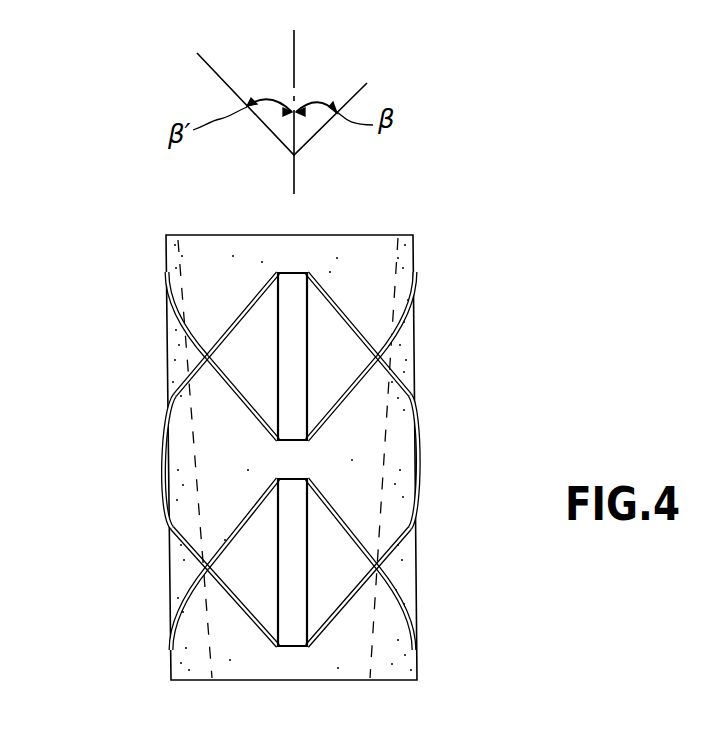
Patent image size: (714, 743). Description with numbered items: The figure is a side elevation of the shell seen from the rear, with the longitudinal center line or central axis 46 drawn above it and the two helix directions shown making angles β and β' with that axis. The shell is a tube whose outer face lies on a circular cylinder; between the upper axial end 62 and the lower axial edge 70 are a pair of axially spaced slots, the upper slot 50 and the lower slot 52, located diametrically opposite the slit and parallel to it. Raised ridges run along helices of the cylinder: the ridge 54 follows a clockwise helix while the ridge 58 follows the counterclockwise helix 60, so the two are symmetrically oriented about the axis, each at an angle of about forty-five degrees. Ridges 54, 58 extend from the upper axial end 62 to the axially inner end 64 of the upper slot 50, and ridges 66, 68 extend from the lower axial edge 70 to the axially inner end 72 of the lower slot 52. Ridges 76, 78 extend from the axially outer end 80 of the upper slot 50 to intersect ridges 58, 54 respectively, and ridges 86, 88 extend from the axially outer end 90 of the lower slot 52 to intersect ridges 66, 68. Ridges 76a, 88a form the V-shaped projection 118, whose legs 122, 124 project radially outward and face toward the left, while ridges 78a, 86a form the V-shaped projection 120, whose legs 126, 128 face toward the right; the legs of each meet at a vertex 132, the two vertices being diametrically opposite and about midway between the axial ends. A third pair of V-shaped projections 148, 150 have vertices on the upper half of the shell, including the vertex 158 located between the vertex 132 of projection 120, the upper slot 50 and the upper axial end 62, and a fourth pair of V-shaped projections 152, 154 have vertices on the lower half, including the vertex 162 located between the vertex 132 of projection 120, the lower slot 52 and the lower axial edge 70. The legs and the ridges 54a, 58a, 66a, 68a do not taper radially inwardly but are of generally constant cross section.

The central axis 46 is at (295, 51).
The upper slot 50 is at (277, 270).
The lower slot 52 is at (307, 645).
The ridge 54 is at (338, 404).
The ridge 54a is at (415, 273).
The ridge 58 is at (256, 405).
The ridge 58a is at (166, 286).
The helix 60 is at (165, 276).
The upper axial end 62 is at (352, 234).
The axially inner end of slot 50 64 is at (294, 441).
The ridge 66 is at (338, 520).
The ridge 66a is at (420, 638).
The ridge 68 is at (243, 524).
The ridge 68a is at (168, 638).
The lower axial edge 70 is at (312, 684).
The axially inner end of slot 52 72 is at (290, 479).
The ridge 76 is at (245, 311).
The ridge 76a is at (163, 452).
The ridge 78 is at (340, 313).
The ridge 78a is at (418, 442).
The axially outer end of slot 50 80 is at (283, 272).
The ridge 86 is at (348, 606).
The ridge 86a is at (416, 497).
The ridge 88 is at (240, 606).
The ridge 88a is at (168, 498).
The axially outer end of slot 52 90 is at (294, 647).
The V-shaped projection 118 is at (167, 492).
The V-shaped projection 120 is at (415, 485).
The leg 122 is at (176, 428).
The leg 124 is at (175, 495).
The leg 126 is at (386, 410).
The leg 128 is at (383, 518).
The vertex 132 is at (164, 470).
The V-shaped projection 148 is at (252, 297).
The V-shaped projection 150 is at (332, 298).
The V-shaped projection 152 is at (250, 617).
The V-shaped projection 154 is at (334, 617).
The vertex 158 is at (358, 330).
The vertex 162 is at (330, 618).